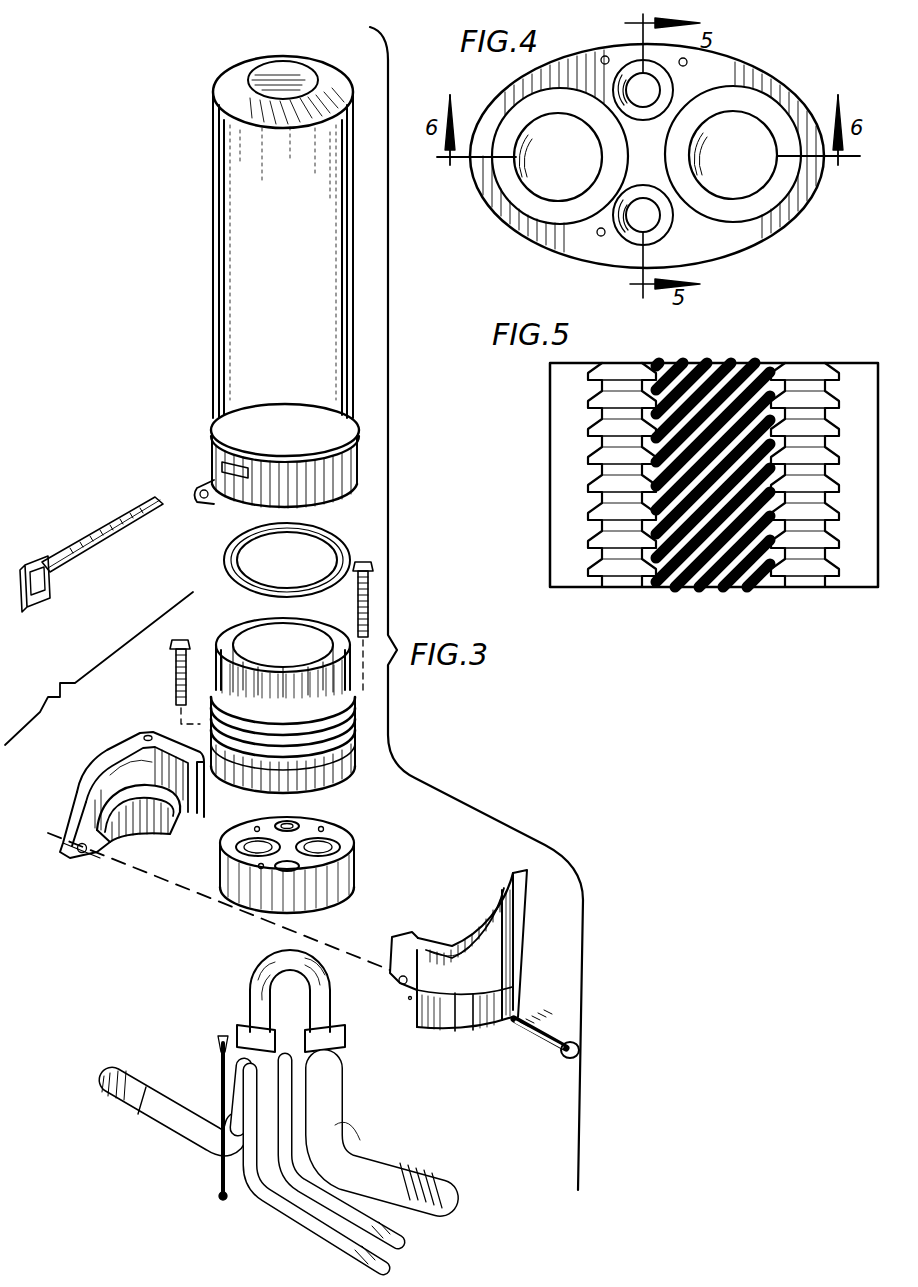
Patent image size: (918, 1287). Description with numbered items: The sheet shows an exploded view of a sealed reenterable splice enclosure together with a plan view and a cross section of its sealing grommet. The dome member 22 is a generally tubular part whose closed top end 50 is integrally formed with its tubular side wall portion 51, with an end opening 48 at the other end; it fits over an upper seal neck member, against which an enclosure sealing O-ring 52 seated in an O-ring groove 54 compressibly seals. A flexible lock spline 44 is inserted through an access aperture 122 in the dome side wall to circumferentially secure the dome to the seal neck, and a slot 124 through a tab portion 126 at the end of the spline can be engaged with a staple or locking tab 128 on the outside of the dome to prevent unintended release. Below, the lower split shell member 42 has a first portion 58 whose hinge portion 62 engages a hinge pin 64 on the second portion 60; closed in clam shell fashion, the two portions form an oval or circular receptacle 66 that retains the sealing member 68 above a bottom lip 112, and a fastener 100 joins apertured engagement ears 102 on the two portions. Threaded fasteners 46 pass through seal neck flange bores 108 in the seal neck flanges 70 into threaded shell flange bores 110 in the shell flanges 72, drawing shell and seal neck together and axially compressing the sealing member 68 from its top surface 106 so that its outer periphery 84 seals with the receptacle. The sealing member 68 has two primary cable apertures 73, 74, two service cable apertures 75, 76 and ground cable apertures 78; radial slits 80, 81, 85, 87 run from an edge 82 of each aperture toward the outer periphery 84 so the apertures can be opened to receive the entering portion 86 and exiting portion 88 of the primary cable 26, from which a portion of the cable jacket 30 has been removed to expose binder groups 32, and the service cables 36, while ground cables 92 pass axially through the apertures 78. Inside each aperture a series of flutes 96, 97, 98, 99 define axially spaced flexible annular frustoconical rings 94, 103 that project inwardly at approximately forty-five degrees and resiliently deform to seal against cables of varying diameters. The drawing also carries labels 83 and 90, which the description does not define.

In FIG. 3, the dome member 22 is at (239, 237).
In FIG. 3, the primary cable 26 is at (272, 1151).
In FIG. 3, the cable jacket 30 is at (346, 1045).
In FIG. 3, the binder groups 32 is at (331, 1057).
In FIG. 3, the service cables 36 is at (312, 1238).
In FIG. 3, the lower split shell member 42 is at (70, 790).
In FIG. 3, the lock spline 44 is at (90, 555).
In FIG. 3, the threaded fasteners 46 is at (368, 560).
In FIG. 3, the end opening 48 is at (255, 474).
In FIG. 3, the closed top end 50 is at (232, 95).
In FIG. 3, the tubular side wall portion 51 is at (235, 283).
In FIG. 3, the enclosure sealing O-ring 52 is at (224, 560).
In FIG. 3, the O-ring groove 54 is at (232, 655).
In FIG. 3, the first portion 58 is at (119, 775).
In FIG. 3, the second portion 60 is at (505, 900).
In FIG. 3, the hinge portion 62 is at (188, 848).
In FIG. 3, the hinge pin 64 is at (481, 936).
In FIG. 3, the receptacle 66 is at (98, 772).
In FIG. 3, the sealing grommet member 68 is at (298, 844).
In FIG. 4, the sealing grommet member 68 is at (645, 168).
In FIG. 5, the sealing grommet member 68 is at (668, 482).
In FIG. 3, the seal neck flanges 70 is at (225, 785).
In FIG. 3, the shell flanges 72 is at (105, 755).
In FIG. 3, the primary cable aperture 73 is at (244, 852).
In FIG. 4, the primary cable aperture 73 is at (535, 135).
In FIG. 3, the primary cable aperture 74 is at (332, 846).
In FIG. 4, the primary cable aperture 74 is at (742, 128).
In FIG. 3, the service cable aperture 75 is at (287, 822).
In FIG. 4, the service cable aperture 75 is at (626, 70).
In FIG. 5, the service cable aperture 75 is at (632, 590).
In FIG. 3, the service cable aperture 76 is at (300, 870).
In FIG. 4, the service cable aperture 76 is at (630, 227).
In FIG. 5, the service cable aperture 76 is at (790, 592).
In FIG. 3, the ground cable apertures 78 is at (258, 826).
In FIG. 4, the ground cable apertures 78 is at (603, 56).
In FIG. 3, the radial slit 80 is at (250, 840).
In FIG. 4, the radial slit 80 is at (495, 155).
In FIG. 3, the radial slit 81 is at (352, 858).
In FIG. 4, the radial slit 81 is at (815, 172).
In FIG. 4, the edge 82 is at (618, 108).
In FIG. 5, the edge 82 is at (610, 350).
In FIG. 4, the recess 83 is at (668, 195).
In FIG. 5, the recess 83 is at (780, 368).
In FIG. 3, the outer periphery 84 is at (252, 898).
In FIG. 4, the outer periphery 84 is at (540, 72).
In FIG. 5, the outer periphery 84 is at (552, 510).
In FIG. 3, the radial slit 85 is at (290, 872).
In FIG. 4, the radial slit 85 is at (643, 255).
In FIG. 5, the radial slit 85 is at (860, 580).
In FIG. 3, the entering portion 86 is at (355, 1135).
In FIG. 3, the radial slit 87 is at (305, 832).
In FIG. 4, the radial slit 87 is at (655, 90).
In FIG. 5, the radial slit 87 is at (562, 462).
In FIG. 3, the exiting portion 88 is at (168, 1090).
In FIG. 3, the dipstick rod 90 is at (220, 1085).
In FIG. 3, the ground cables 92 is at (530, 935).
In FIG. 4, the flexible annular frustoconical rings 94 is at (512, 230).
In FIG. 4, the flute 96 is at (500, 200).
In FIG. 4, the flute 97 is at (775, 228).
In FIG. 4, the flute 98 is at (612, 112).
In FIG. 5, the flute 98 is at (640, 368).
In FIG. 4, the flute 99 is at (668, 232).
In FIG. 5, the flute 99 is at (815, 368).
In FIG. 3, the fastener 100 is at (555, 1050).
In FIG. 3, the split shell engagement ears 102 is at (80, 856).
In FIG. 5, the flexible annular frustoconical rings 103 is at (838, 410).
In FIG. 4, the top surface 106 is at (680, 150).
In FIG. 5, the top surface 106 is at (740, 362).
In FIG. 3, the seal neck flange bores 108 is at (200, 742).
In FIG. 3, the shell flange bores 110 is at (147, 733).
In FIG. 3, the bottom lip 112 is at (120, 853).
In FIG. 3, the access aperture 122 is at (234, 468).
In FIG. 3, the slot 124 is at (44, 592).
In FIG. 3, the tab portion 126 is at (40, 562).
In FIG. 3, the staple 128 is at (203, 490).